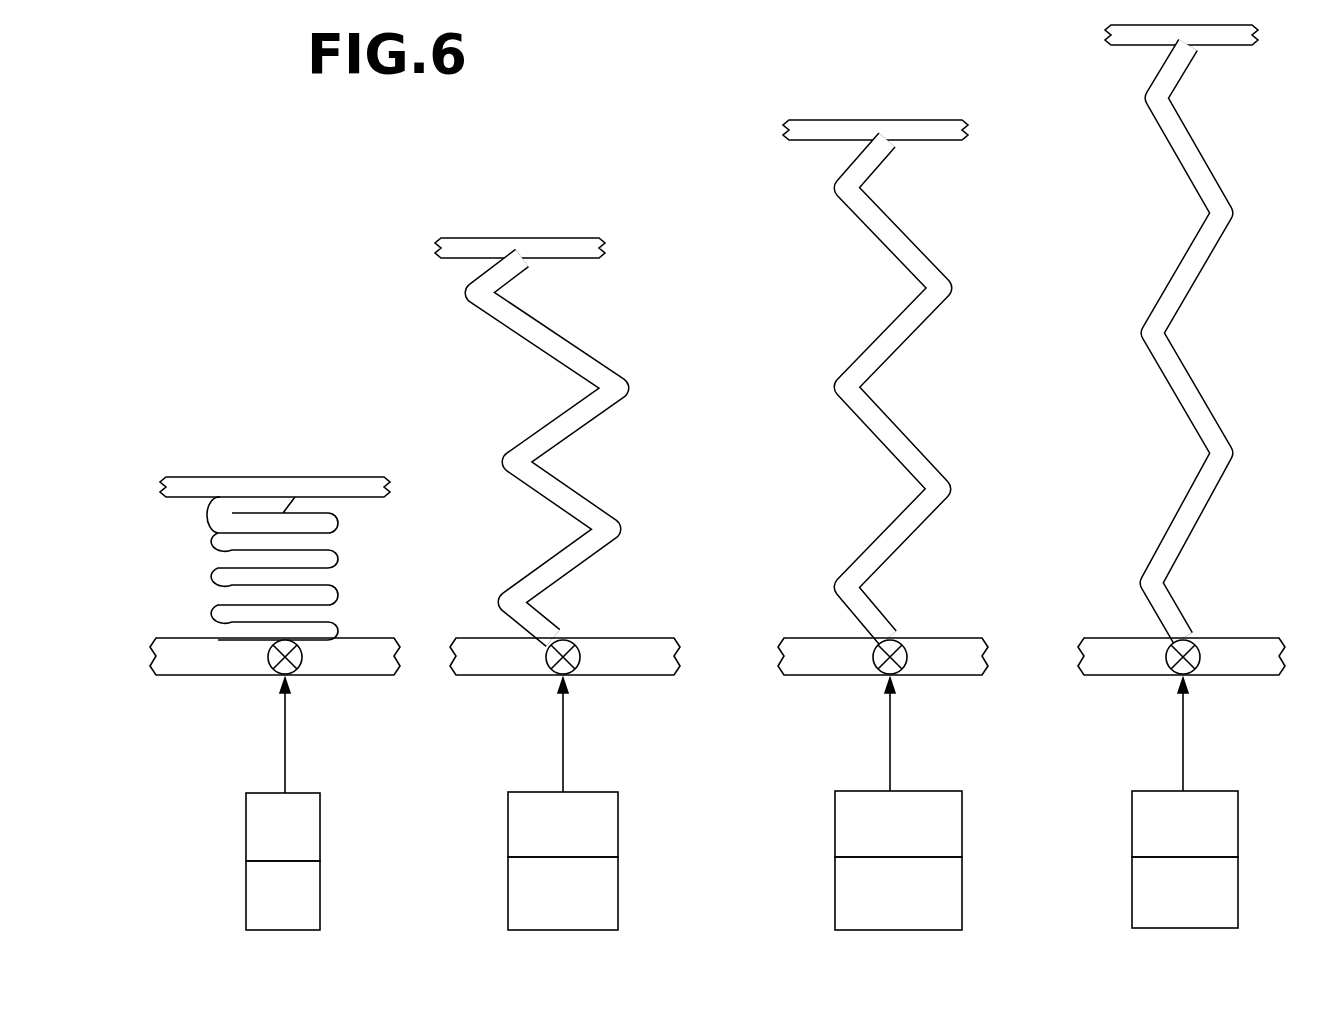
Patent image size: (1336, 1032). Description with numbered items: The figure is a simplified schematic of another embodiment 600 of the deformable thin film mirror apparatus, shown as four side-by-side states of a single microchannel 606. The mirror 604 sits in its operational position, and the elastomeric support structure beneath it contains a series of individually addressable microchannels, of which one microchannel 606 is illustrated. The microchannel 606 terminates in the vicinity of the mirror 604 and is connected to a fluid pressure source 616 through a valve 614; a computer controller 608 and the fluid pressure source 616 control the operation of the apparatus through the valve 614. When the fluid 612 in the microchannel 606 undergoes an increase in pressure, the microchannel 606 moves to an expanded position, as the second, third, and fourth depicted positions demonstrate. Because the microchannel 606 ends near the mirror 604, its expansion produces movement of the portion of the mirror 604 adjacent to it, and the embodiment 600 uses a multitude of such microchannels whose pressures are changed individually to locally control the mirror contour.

The embodiment of the inventor's apparatus, systems, and methods 600 is at (318, 187).
The mirror 604 is at (290, 477).
The microchannel 606 is at (207, 553).
The computer controller 608 is at (266, 907).
The fluid 612 is at (196, 638).
The valve 614 is at (272, 668).
The fluid pressure source 616 is at (266, 842).